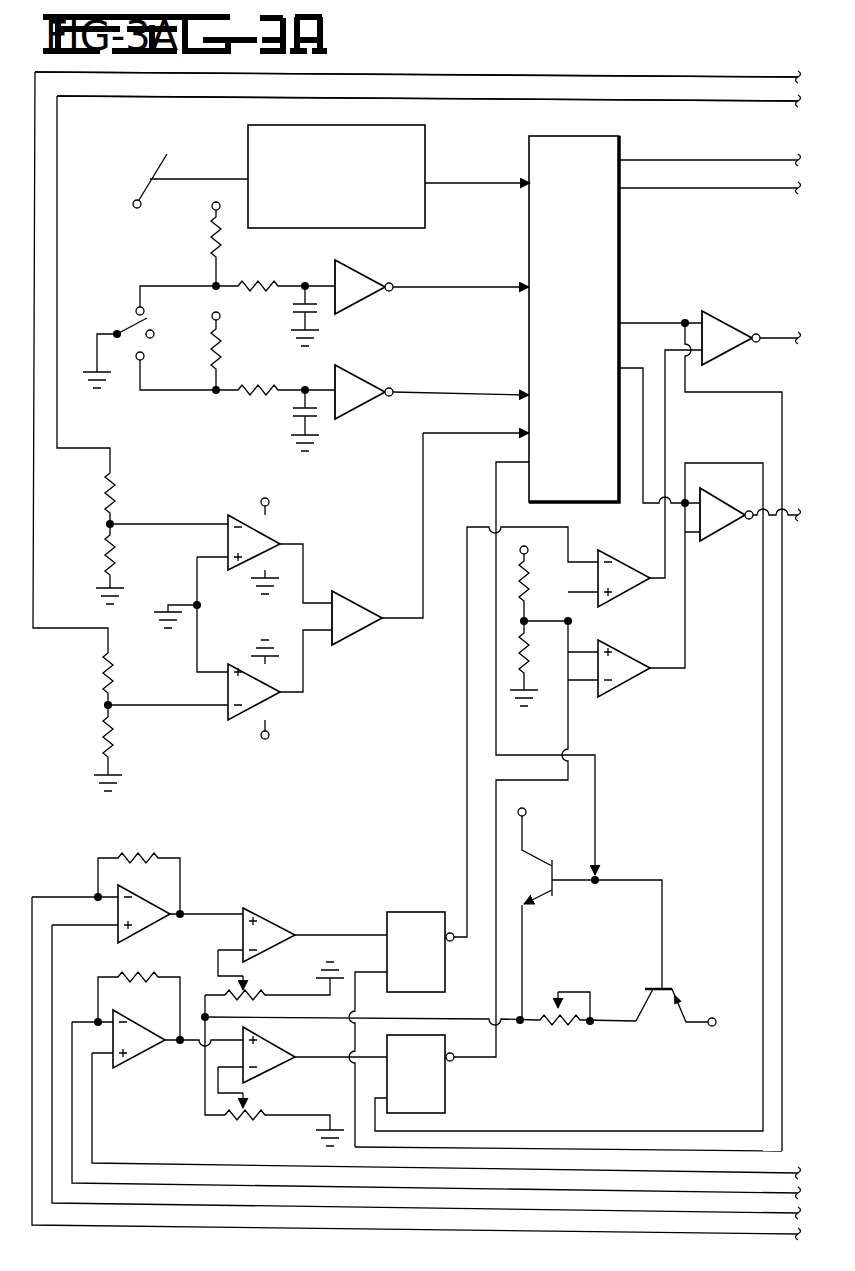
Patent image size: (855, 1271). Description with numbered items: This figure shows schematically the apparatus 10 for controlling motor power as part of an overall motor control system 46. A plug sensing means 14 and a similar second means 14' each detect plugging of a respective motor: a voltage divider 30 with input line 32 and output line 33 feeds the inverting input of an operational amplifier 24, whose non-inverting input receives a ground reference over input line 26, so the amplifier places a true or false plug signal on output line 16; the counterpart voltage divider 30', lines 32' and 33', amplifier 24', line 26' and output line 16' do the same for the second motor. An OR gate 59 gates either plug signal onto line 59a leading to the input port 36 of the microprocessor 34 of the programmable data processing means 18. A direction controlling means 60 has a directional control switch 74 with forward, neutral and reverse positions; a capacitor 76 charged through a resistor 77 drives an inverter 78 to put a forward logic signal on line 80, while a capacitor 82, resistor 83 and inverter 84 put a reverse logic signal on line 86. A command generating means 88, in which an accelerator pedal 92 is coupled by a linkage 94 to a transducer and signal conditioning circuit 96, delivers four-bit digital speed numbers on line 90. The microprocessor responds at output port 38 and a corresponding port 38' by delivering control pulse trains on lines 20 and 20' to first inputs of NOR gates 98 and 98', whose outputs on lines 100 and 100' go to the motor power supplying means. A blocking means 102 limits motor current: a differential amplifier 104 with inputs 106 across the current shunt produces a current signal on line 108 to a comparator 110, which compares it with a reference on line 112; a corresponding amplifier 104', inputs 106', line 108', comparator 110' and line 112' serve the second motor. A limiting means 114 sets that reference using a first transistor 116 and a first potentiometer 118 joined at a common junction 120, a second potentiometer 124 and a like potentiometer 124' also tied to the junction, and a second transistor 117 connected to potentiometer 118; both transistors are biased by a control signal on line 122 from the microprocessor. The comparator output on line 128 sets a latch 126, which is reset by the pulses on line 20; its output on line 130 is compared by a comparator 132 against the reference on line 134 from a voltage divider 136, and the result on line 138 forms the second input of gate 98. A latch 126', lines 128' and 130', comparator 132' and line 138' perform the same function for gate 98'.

The apparatus 10 is at (718, 54).
The plug sensing and data signal generating means 14 is at (190, 495).
The second plug sensing means 14' is at (256, 733).
The output line 16 is at (322, 573).
The output line 16' is at (325, 661).
The programmable data processing means 18 is at (592, 128).
The output line 20 is at (561, 737).
The output line 20' is at (568, 795).
The operational amplifier 24 is at (283, 543).
The operational amplifier 24' is at (281, 696).
The input line 26 is at (182, 614).
The input line 26' is at (167, 685).
The voltage divider 30 is at (80, 537).
The voltage divider 30' is at (79, 720).
The input line 32 is at (93, 283).
The input line 32' is at (70, 374).
The output line 33 is at (169, 508).
The output line 33' is at (168, 731).
The microprocessor 34 is at (622, 254).
The input port 36 is at (527, 430).
The output port 38 is at (660, 300).
The output port 38' is at (632, 437).
The motor control system 46 is at (520, 55).
The OR gate 59 is at (350, 600).
The line 59a is at (423, 475).
The direction controlling means 60 is at (522, 113).
The directional control switch 74 is at (125, 310).
The capacitor 76 is at (315, 320).
The resistor 77 is at (262, 282).
The inverter 78 is at (365, 275).
The line 80 is at (430, 288).
The capacitor 82 is at (315, 425).
The resistor 83 is at (258, 385).
The inverter 84 is at (365, 380).
The line 86 is at (430, 393).
The command signal generating means 88 is at (356, 98).
The output line 90 is at (445, 182).
The accelerator pedal 92 is at (155, 165).
The linkage 94 is at (205, 178).
The transducer and signal conditioning circuit 96 is at (325, 124).
The two-input NOR gate 98 is at (731, 319).
The two-input NOR gate 98' is at (728, 504).
The line 100 is at (786, 313).
The line 100' is at (588, 797).
The blocking means 102 is at (358, 882).
The differential amplifier 104 is at (121, 861).
The differential amplifier 104' is at (124, 992).
The inputs 106 is at (416, 1049).
The inputs 106' is at (428, 1094).
The line 108 is at (215, 892).
The line 108' is at (189, 1067).
The comparator 110 is at (289, 914).
The comparator 110' is at (293, 1045).
The line 112 is at (200, 962).
The line 112' is at (195, 1100).
The current limiting means 114 is at (588, 940).
The first transistor 116 is at (515, 866).
The second transistor 117 is at (680, 1000).
The first potentiometer 118 is at (605, 1000).
The common junction 120 is at (523, 1026).
The line 122 is at (493, 725).
The second potentiometer 124 is at (274, 987).
The second potentiometer 124' is at (274, 1081).
The latch 126 is at (420, 930).
The latch 126' is at (452, 1081).
The line 128 is at (341, 922).
The line 128' is at (334, 1072).
The line 130 is at (518, 726).
The line 130' is at (526, 844).
The comparator 132 is at (630, 596).
The comparator 132' is at (631, 690).
The line 134 is at (547, 625).
The voltage divider 136 is at (505, 633).
The line 138 is at (695, 464).
The line 138' is at (704, 585).